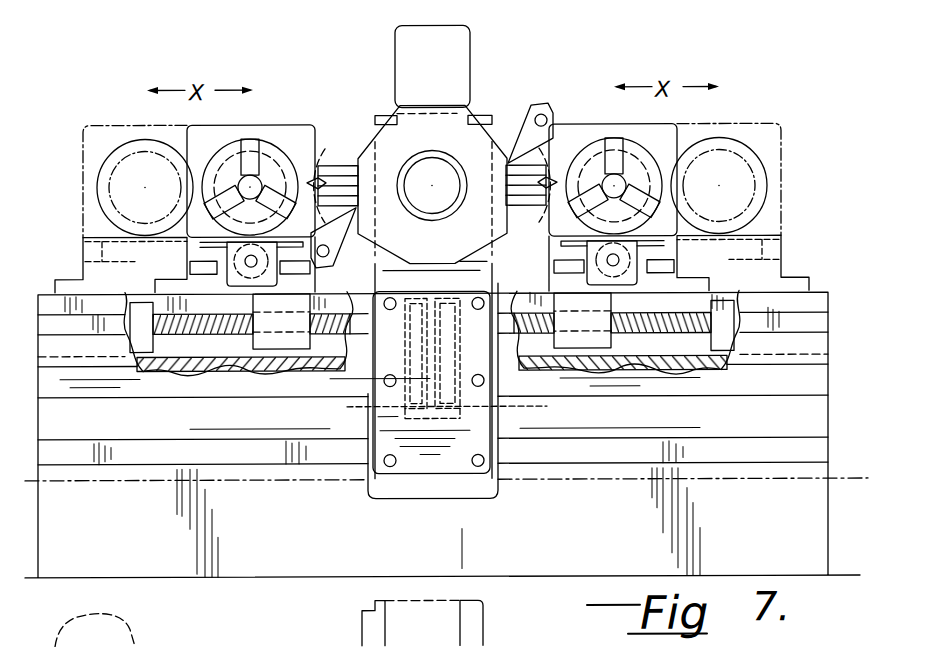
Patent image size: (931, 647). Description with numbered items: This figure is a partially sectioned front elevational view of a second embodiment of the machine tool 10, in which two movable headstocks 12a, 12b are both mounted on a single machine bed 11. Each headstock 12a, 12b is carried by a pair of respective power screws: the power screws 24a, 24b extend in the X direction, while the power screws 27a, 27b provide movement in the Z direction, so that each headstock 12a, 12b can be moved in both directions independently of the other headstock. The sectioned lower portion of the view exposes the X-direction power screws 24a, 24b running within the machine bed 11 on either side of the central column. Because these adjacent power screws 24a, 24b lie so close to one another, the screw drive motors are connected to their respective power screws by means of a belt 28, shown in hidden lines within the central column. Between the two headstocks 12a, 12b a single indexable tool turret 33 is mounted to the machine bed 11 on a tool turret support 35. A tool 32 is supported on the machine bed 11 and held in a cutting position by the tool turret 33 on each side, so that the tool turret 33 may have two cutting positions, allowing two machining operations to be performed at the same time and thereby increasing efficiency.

The machine tool 10 is at (368, 67).
The machine bed 11 is at (112, 432).
The movable headstock 12a is at (282, 128).
The movable headstock 12b is at (592, 123).
The power screw 24a is at (205, 333).
The power screw 24b is at (688, 330).
The power screw 27a is at (248, 262).
The power screw 27b is at (620, 262).
The belt 28 is at (425, 345).
The tool 32 is at (313, 180).
The tool turret 33 is at (488, 153).
The tool turret support 35 is at (455, 465).